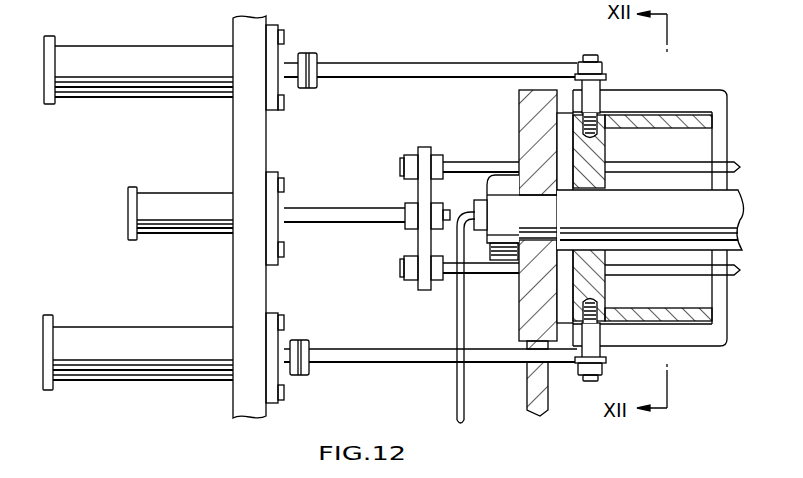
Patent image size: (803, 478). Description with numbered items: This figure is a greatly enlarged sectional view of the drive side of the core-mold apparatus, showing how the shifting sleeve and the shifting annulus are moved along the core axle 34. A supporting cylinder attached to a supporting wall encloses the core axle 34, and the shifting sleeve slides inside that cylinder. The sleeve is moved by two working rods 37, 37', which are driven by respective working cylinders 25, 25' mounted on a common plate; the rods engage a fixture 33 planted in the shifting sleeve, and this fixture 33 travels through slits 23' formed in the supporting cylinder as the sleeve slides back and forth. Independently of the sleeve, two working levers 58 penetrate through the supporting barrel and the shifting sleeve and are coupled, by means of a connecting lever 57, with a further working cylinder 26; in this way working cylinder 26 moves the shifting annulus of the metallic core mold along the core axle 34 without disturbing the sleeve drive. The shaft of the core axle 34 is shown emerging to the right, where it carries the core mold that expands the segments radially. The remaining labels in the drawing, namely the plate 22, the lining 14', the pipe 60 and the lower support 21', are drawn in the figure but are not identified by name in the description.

The working cylinder 25 is at (138, 59).
The working cylinder 26 is at (178, 200).
The working cylinder 25' is at (138, 340).
The mounting plate 22 is at (233, 267).
The working rod 37 is at (430, 61).
The working rod 37' is at (430, 347).
The connecting lever 57 is at (318, 208).
The working levers 58 is at (458, 162).
The fixture 33 is at (598, 82).
The slits 23' is at (650, 203).
The lining strip 14' is at (658, 218).
The core axle 34 is at (745, 207).
The pipe 60 is at (457, 318).
The support block 21' is at (517, 253).